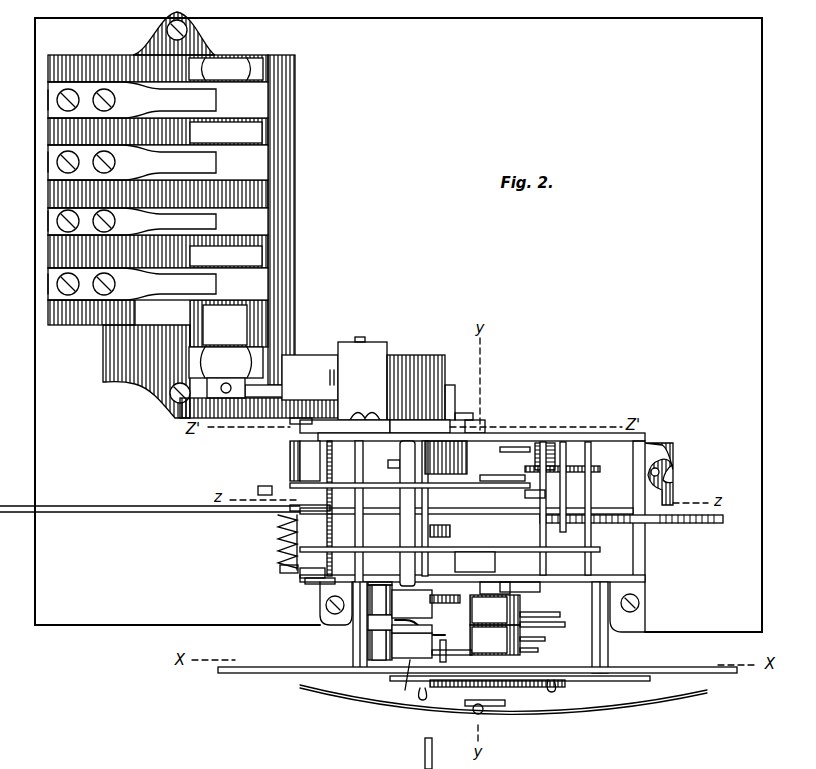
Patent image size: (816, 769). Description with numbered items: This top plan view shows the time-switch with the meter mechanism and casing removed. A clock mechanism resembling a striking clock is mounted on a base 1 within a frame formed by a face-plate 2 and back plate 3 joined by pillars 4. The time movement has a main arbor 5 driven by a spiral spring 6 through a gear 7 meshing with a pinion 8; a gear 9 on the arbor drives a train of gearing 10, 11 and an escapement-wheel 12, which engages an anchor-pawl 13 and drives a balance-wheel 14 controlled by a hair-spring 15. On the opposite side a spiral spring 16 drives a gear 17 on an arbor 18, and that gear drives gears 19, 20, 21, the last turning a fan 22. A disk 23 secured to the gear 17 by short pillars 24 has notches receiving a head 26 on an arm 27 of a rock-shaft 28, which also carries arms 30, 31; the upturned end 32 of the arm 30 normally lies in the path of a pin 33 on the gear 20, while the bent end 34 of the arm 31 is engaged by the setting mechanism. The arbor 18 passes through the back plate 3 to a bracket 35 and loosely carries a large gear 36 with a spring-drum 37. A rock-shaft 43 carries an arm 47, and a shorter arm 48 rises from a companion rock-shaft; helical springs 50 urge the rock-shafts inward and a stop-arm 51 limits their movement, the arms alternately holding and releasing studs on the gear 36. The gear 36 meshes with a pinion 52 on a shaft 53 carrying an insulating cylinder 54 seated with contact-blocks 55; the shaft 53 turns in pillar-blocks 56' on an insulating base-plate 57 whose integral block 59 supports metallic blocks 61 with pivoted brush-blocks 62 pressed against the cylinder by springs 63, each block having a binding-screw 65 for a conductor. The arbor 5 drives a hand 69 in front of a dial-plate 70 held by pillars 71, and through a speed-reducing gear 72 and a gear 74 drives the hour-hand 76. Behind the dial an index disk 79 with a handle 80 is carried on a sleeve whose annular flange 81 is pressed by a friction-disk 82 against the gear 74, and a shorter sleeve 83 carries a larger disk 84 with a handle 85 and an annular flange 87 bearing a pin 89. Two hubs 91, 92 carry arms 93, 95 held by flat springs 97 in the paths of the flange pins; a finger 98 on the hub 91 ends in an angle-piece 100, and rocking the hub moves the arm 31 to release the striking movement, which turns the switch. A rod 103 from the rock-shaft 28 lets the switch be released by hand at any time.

The base 1 is at (398, 325).
The face-plate 2 is at (568, 582).
The back plate 3 is at (592, 433).
The pillars 4 is at (645, 556).
The main or hand-carrying arbor 5 is at (483, 483).
The spiral spring 6 is at (673, 460).
The gear 7 is at (706, 524).
The pinion 8 is at (538, 487).
The gear 9 is at (520, 588).
The train of gearing 10 is at (640, 535).
The train of gearing 11 is at (508, 447).
The escapement-wheel 12 is at (545, 443).
The anchor-pawl 13 is at (588, 466).
The balance-wheel 14 is at (452, 512).
The hair-spring 15 is at (463, 562).
The spiral spring 16 is at (290, 462).
The gear 17 is at (290, 484).
The arbor 18 is at (372, 485).
The gear 19 is at (391, 513).
The gear 20 is at (402, 508).
The gear 21 is at (278, 545).
The fan 22 is at (290, 508).
The disk 23 is at (338, 508).
The short pillars 24 is at (258, 489).
The head 26 is at (278, 508).
The arm 27 is at (305, 461).
The rock-shaft 28 is at (290, 446).
The arm 30 is at (450, 544).
The arm 31 is at (380, 591).
The upturned end 32 is at (412, 604).
The pin 33 is at (441, 536).
The bent end 34 is at (443, 591).
The bracket 35 is at (362, 378).
The large gear 36 is at (310, 377).
The spring-drum 37 is at (415, 372).
The rock-shaft 43 is at (280, 570).
The arm 47 is at (290, 423).
The arm 48 is at (460, 415).
The helical spring 50 is at (278, 558).
The stop-arm 51 is at (300, 578).
The pinion 52 is at (178, 405).
The shaft 53 is at (225, 325).
The cylinder 54 is at (296, 292).
The contact-blocks 55 is at (226, 194).
The pillar-blocks 56' is at (226, 218).
The insulating base-plate 57 is at (103, 355).
The block 59 is at (48, 265).
The metallic blocks 61 is at (48, 100).
The brush-blocks 62 is at (158, 191).
The springs 63 is at (132, 191).
The binding-screw 65 is at (86, 186).
The hour-hand 69 is at (560, 708).
The dial-plate 70 is at (277, 667).
The pillars 71 is at (353, 646).
The speed-reducing gear 72 is at (506, 587).
The gear 74 is at (542, 613).
The hour-hand 76 is at (375, 692).
The disk 79 is at (530, 683).
The handle 80 is at (415, 703).
The annular flange 81 is at (553, 621).
The friction-disk 82 is at (539, 637).
The sleeve 83 is at (494, 640).
The disk 84 is at (390, 679).
The handle 85 is at (567, 690).
The annular flange 87 is at (538, 650).
The pin 89 is at (452, 644).
The hub 91 is at (380, 600).
The hub 92 is at (380, 637).
The arm 93 is at (420, 619).
The arm 95 is at (412, 641).
The flat springs 97 is at (403, 692).
The finger 98 is at (320, 592).
The angle-piece 100 is at (312, 585).
The rod 103 is at (105, 506).